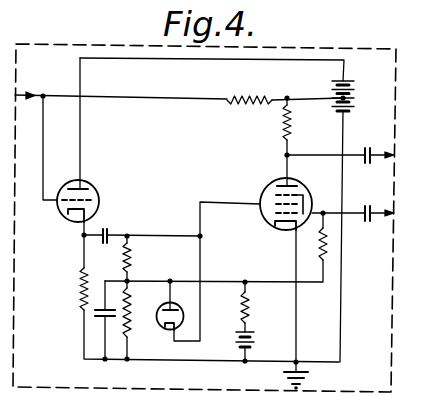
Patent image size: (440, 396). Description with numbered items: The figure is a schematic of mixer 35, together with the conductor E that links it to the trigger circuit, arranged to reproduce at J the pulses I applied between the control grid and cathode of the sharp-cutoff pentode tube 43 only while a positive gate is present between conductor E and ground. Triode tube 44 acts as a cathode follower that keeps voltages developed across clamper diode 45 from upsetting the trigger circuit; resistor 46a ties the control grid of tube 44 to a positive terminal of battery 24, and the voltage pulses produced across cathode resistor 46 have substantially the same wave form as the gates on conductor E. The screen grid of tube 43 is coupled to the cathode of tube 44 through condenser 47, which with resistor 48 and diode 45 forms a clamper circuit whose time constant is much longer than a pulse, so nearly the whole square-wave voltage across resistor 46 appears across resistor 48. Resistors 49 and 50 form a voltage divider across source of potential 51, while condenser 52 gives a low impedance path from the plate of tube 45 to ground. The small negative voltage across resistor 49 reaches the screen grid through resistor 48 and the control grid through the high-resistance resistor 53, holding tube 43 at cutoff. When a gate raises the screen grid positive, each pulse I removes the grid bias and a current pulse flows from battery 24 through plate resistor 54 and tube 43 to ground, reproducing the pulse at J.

The mixer 35 is at (118, 44).
The conductor E is at (30, 92).
The resistor 46a is at (253, 97).
The battery 24 is at (370, 80).
The plate resistor 54 is at (284, 134).
The output point J is at (380, 149).
The pulses I is at (378, 217).
The triode tube 44 is at (97, 190).
The sharp-cutoff pentode tube 43 is at (265, 188).
The condenser 47 is at (110, 232).
The resistor 48 is at (133, 257).
The resistor 46 is at (78, 298).
The condenser 52 is at (100, 318).
The clamper diode 45 is at (158, 313).
The resistor 49 is at (135, 330).
The resistor 53 is at (333, 256).
The resistor 50 is at (250, 305).
The source of potential 51 is at (257, 342).